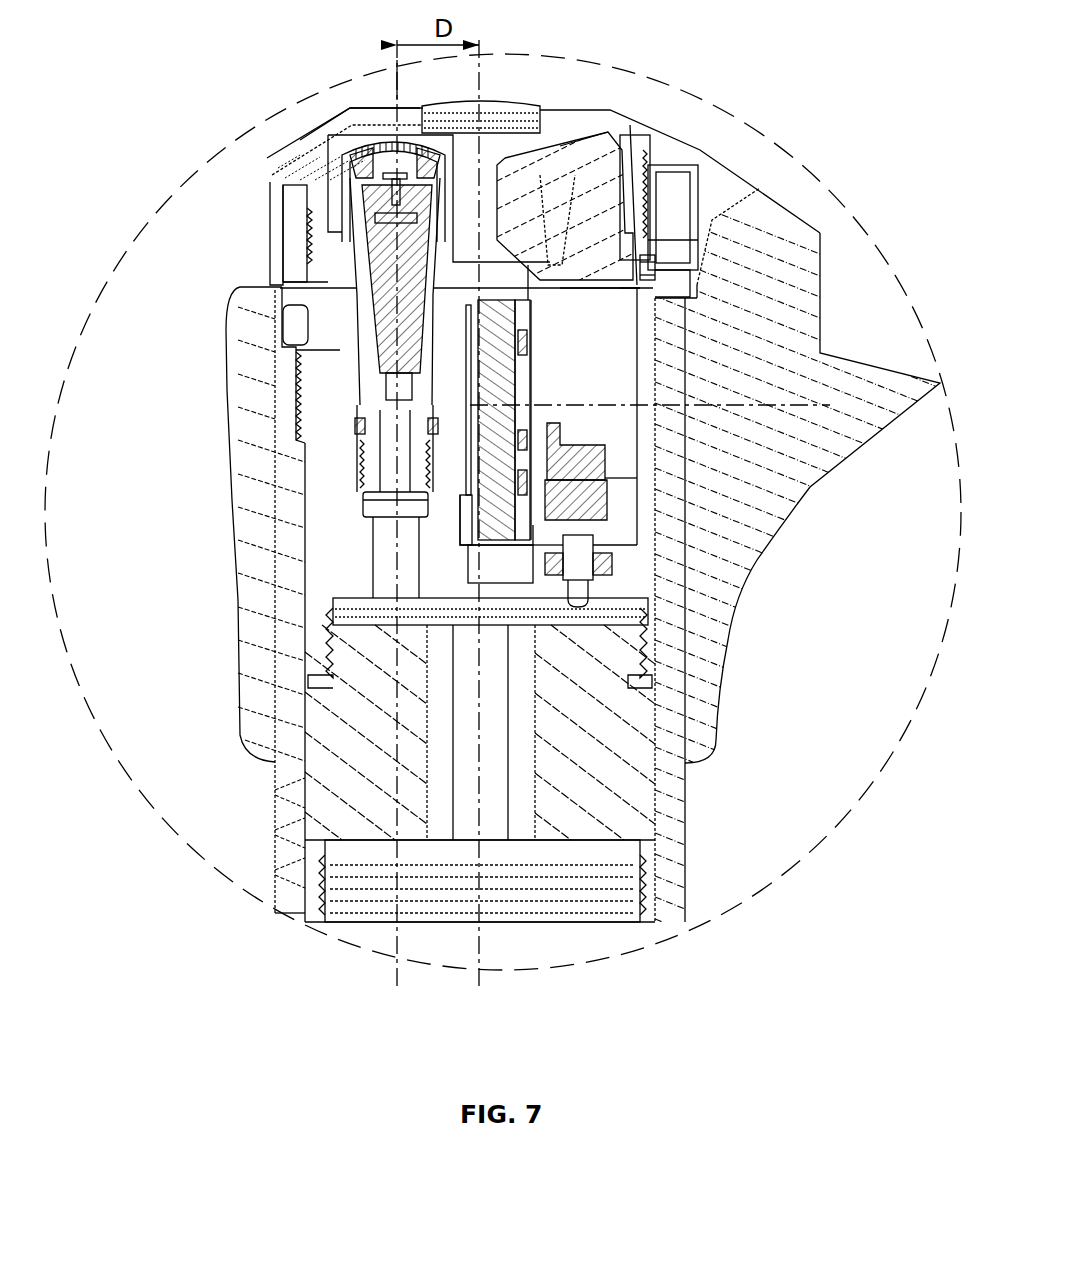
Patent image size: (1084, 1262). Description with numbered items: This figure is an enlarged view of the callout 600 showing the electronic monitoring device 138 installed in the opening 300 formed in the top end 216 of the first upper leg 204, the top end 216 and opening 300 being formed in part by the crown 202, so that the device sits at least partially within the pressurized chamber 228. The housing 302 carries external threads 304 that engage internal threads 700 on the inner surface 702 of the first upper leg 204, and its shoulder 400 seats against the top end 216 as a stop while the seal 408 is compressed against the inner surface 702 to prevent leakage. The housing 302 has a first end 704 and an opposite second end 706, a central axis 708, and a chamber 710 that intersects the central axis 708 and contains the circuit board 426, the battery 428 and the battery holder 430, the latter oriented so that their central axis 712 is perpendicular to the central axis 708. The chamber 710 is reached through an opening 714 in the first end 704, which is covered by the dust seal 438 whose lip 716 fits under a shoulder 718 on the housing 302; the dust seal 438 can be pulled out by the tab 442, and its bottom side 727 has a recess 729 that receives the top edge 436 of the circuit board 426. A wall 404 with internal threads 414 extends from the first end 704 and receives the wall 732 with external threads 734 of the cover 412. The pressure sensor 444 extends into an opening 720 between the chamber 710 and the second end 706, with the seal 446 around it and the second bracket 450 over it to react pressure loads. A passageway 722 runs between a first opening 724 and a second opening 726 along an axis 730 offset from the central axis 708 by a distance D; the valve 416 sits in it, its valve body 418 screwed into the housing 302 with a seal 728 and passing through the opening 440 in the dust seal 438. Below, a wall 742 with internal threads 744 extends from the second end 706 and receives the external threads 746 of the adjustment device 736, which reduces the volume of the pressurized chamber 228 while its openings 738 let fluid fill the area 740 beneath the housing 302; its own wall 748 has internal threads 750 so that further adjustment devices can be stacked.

The electronic monitoring device 138 is at (235, 82).
The cover 412 is at (322, 132).
The callout 600 is at (343, 80).
The axis 730 is at (397, 75).
The central axis 708 is at (482, 73).
The tab 442 is at (563, 177).
The dust seal 438 is at (580, 183).
The top edge 436 is at (520, 278).
The recess 729 is at (555, 272).
The external threads 734 is at (625, 293).
The wall 732 is at (640, 200).
The internal threads 414 is at (645, 215).
The opening 714 is at (653, 253).
The wall 404 is at (650, 258).
The shoulder 718 is at (655, 262).
The lip 716 is at (655, 272).
The bottom side 727 is at (602, 288).
The chamber 710 is at (632, 376).
The central axis 712 is at (778, 407).
The circuit board 426 is at (520, 342).
The battery 428 is at (500, 360).
The battery holder 430 is at (468, 385).
The opening 440 is at (350, 252).
The first opening 724 is at (350, 277).
The first end 704 is at (280, 282).
The shoulder 400 is at (273, 280).
The top end 216 is at (267, 280).
The opening 300 is at (283, 295).
The seal 408 is at (298, 322).
The crown 202 is at (240, 360).
The external threads 304 is at (295, 386).
The internal threads 700 is at (295, 405).
The inner surface 702 is at (305, 440).
The seal 728 is at (360, 423).
The valve 416 is at (345, 453).
The valve body 418 is at (378, 467).
The housing 302 is at (338, 527).
The passageway 722 is at (372, 557).
The second end 706 is at (352, 600).
The second opening 726 is at (385, 600).
The second bracket 450 is at (600, 465).
The opening 720 is at (612, 562).
The seal 446 is at (600, 578).
The pressure sensor 444 is at (585, 583).
The area 740 is at (632, 622).
The wall 742 is at (650, 658).
The internal threads 744 is at (640, 665).
The external threads 746 is at (635, 672).
The openings 738 is at (450, 730).
The adjustment device 736 is at (633, 790).
The wall 748 is at (645, 870).
The internal threads 750 is at (637, 900).
The first upper leg 204 is at (297, 828).
The pressurized chamber 228 is at (607, 946).